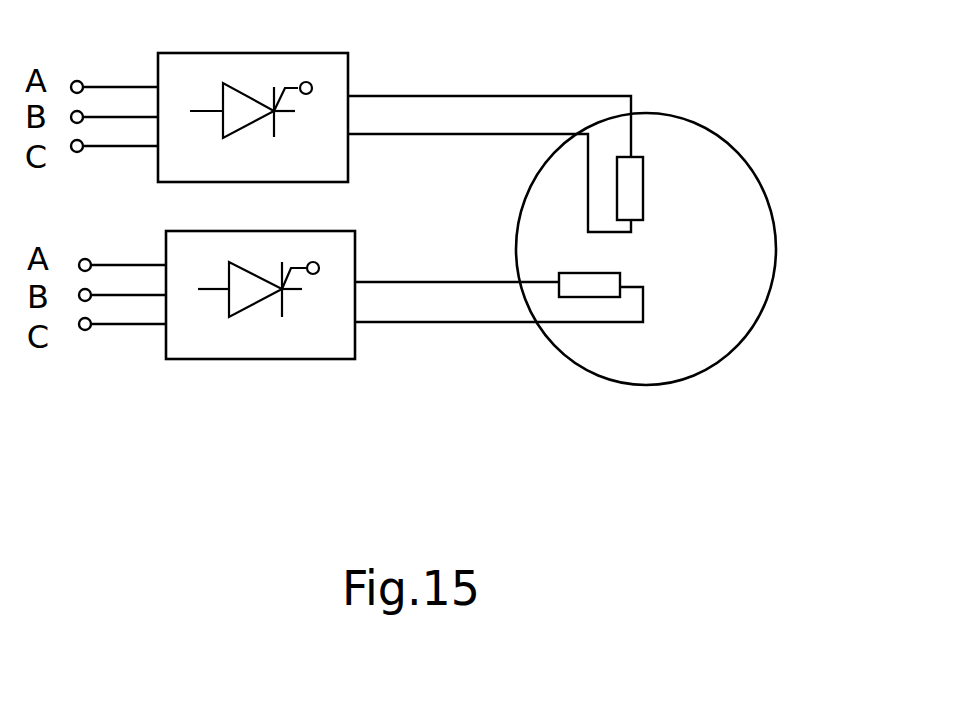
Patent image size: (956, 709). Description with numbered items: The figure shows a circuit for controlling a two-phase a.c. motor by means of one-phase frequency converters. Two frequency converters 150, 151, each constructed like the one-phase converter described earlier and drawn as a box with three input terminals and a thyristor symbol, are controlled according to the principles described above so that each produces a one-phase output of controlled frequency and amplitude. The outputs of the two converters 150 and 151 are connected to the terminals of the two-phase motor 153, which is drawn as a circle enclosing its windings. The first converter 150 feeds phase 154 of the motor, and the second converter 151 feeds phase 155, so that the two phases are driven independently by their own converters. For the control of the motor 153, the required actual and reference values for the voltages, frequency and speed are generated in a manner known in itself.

The frequency converter 150 is at (223, 52).
The frequency converter 151 is at (228, 362).
The two-phase motor 153 is at (772, 200).
The phase 154 is at (643, 178).
The phase 155 is at (607, 297).